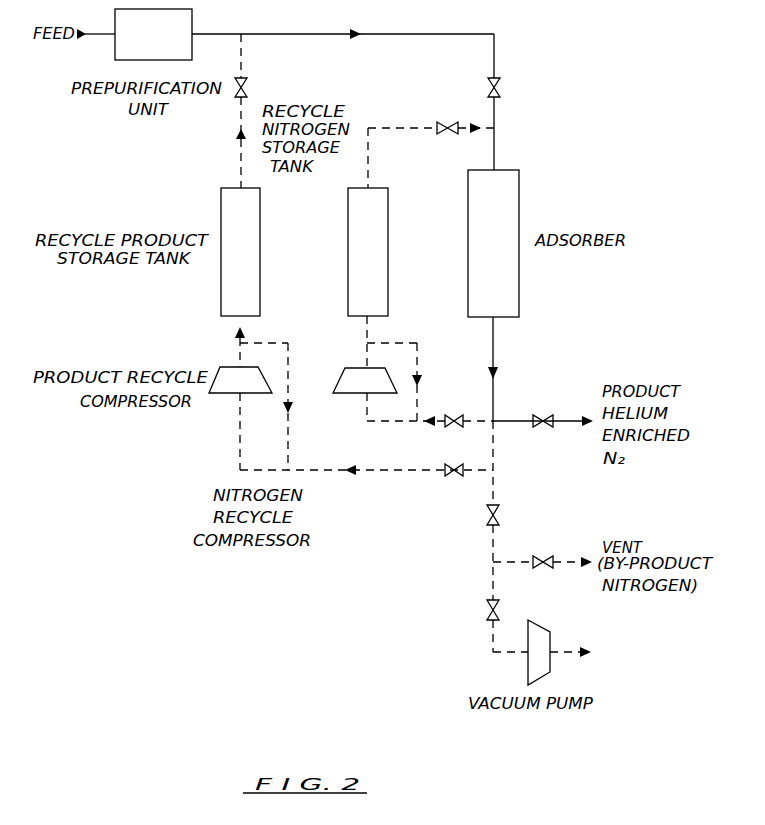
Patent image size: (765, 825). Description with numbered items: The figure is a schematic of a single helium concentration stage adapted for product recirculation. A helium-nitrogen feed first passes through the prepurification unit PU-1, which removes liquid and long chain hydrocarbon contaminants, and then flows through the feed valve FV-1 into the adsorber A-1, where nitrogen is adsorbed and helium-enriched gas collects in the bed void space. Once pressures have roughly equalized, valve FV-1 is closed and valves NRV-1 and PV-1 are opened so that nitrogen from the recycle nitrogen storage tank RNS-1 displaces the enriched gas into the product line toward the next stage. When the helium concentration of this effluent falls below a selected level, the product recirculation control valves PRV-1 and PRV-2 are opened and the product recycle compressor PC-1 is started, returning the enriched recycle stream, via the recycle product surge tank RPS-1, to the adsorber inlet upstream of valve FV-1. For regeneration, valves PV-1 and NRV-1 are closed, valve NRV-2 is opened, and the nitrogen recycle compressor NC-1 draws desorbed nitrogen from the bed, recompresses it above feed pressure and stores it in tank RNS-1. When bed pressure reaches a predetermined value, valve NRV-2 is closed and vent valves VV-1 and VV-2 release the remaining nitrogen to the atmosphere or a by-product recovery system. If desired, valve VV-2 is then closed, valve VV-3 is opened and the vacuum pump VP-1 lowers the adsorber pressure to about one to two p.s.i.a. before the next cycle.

The prepurification unit PU-1 is at (153, 34).
The product recirculation control valve PRV-1 is at (270, 88).
The feed valve FV-1 is at (517, 89).
The nitrogen recycle valve NRV-1 is at (444, 120).
The recycle product surge tank RPS-1 is at (240, 252).
The recycle nitrogen storage tank RNS-1 is at (368, 252).
The adsorber A-1 is at (493, 243).
The product recycle compressor PC-1 is at (240, 380).
The nitrogen recycle compressor NC-1 is at (303, 518).
The nitrogen recycle valve NRV-2 is at (460, 411).
The product valve PV-1 is at (546, 411).
The product recirculation control valve PRV-2 is at (456, 462).
The vent valve VV-1 is at (513, 516).
The vent valve VV-2 is at (542, 552).
The vent valve VV-3 is at (516, 610).
The vacuum pump VP-1 is at (539, 652).